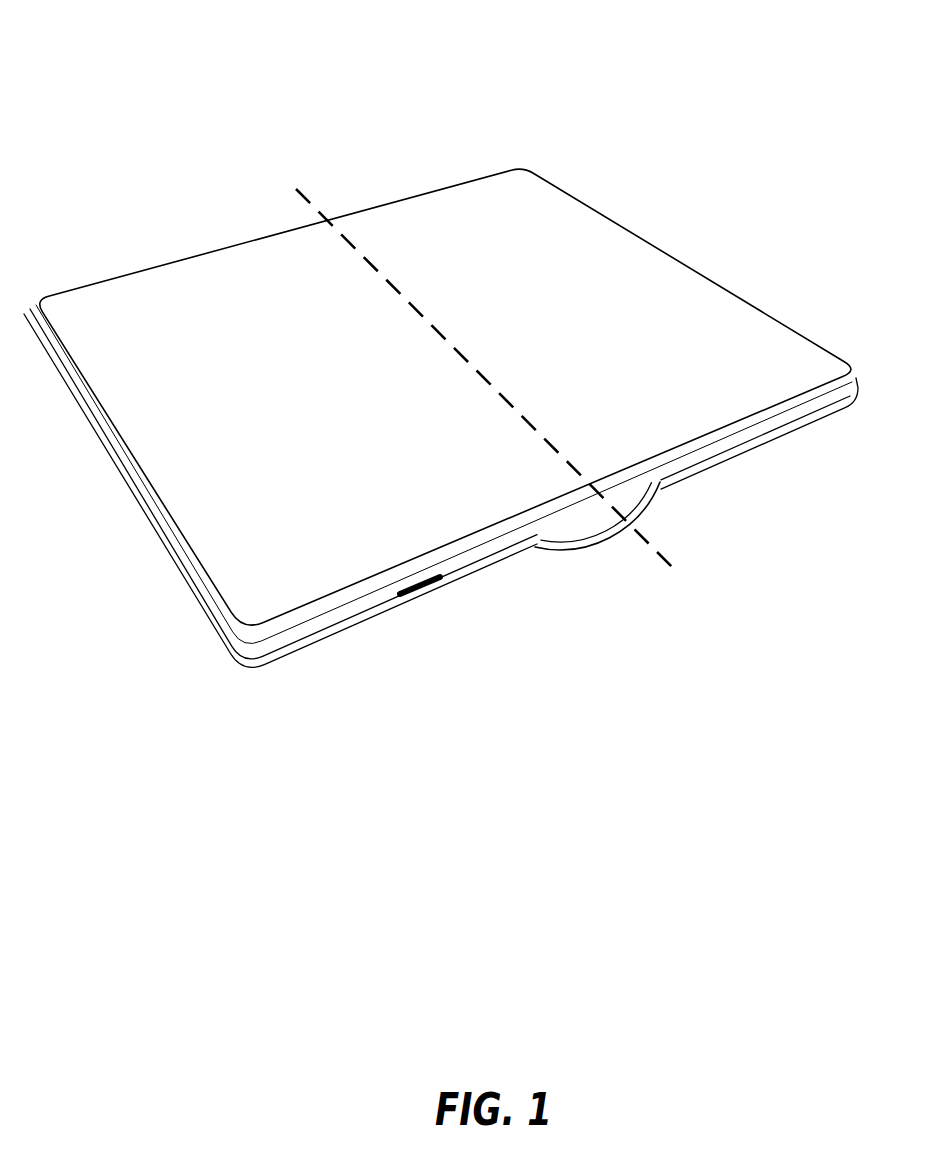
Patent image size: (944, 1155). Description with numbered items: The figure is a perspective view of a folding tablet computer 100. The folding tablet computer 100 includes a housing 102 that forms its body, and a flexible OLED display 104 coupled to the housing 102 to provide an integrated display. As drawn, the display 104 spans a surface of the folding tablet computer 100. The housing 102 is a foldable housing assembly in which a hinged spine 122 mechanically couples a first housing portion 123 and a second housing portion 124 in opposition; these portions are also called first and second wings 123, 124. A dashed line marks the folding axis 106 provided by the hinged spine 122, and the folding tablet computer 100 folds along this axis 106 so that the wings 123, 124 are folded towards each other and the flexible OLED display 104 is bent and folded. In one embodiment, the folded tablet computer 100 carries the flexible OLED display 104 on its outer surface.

The folding tablet computer 100 is at (207, 113).
The housing 102 is at (240, 643).
The flexible OLED display 104 is at (595, 272).
The folding axis 106 is at (653, 548).
The hinged spine 122 is at (583, 550).
The first housing portion 123 is at (291, 556).
The second housing portion 124 is at (734, 396).